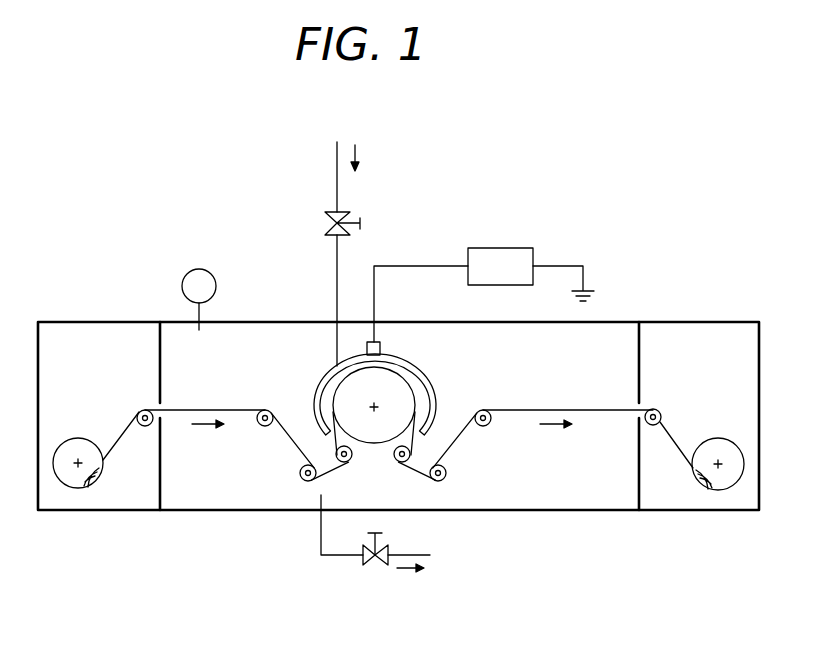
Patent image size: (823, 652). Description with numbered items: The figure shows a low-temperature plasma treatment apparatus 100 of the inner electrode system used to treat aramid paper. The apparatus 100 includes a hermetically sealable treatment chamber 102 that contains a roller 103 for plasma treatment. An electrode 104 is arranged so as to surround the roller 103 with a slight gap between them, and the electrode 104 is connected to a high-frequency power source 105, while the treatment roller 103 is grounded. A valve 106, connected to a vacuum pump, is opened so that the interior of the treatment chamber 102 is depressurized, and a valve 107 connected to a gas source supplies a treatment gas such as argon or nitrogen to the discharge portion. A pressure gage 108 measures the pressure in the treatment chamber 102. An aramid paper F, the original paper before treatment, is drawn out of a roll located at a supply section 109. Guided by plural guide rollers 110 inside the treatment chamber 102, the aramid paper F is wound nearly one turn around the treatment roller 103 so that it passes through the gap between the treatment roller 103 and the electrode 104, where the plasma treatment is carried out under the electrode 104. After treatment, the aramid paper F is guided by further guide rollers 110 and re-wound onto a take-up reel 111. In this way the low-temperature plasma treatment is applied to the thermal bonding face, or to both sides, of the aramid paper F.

The low-temperature plasma treatment apparatus 100 is at (437, 206).
The treatment chamber 102 is at (273, 330).
The roller 103 is at (377, 440).
The electrode 104 is at (410, 365).
The high-frequency power source 105 is at (495, 248).
The valve 106 is at (377, 567).
The valve 107 is at (325, 225).
The pressure gage 108 is at (199, 268).
The supply section 109 is at (78, 438).
The guide rollers 110 is at (143, 428).
The take-up reel 111 is at (732, 438).
The aramid paper F is at (236, 409).